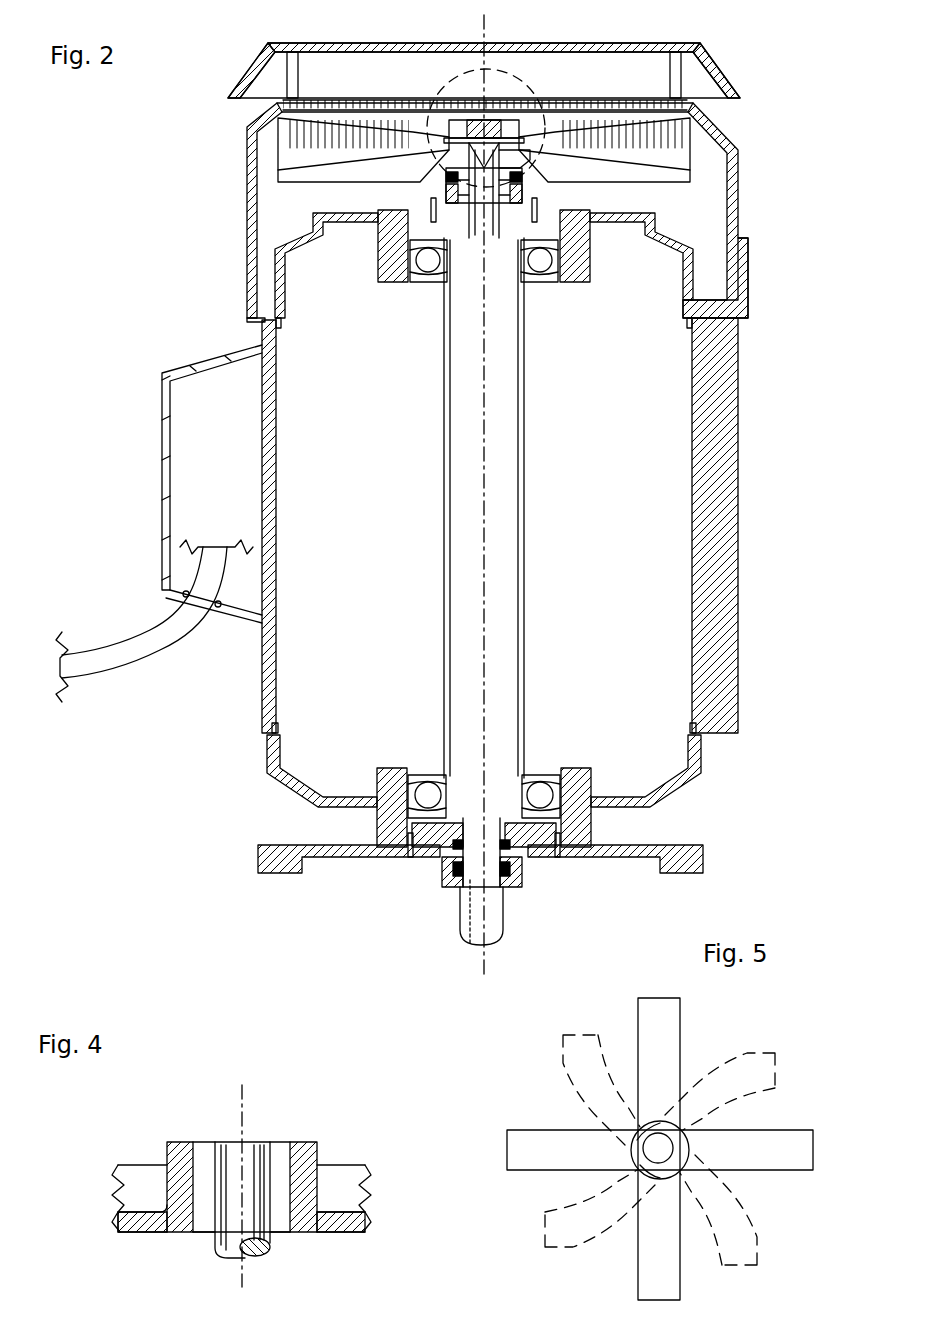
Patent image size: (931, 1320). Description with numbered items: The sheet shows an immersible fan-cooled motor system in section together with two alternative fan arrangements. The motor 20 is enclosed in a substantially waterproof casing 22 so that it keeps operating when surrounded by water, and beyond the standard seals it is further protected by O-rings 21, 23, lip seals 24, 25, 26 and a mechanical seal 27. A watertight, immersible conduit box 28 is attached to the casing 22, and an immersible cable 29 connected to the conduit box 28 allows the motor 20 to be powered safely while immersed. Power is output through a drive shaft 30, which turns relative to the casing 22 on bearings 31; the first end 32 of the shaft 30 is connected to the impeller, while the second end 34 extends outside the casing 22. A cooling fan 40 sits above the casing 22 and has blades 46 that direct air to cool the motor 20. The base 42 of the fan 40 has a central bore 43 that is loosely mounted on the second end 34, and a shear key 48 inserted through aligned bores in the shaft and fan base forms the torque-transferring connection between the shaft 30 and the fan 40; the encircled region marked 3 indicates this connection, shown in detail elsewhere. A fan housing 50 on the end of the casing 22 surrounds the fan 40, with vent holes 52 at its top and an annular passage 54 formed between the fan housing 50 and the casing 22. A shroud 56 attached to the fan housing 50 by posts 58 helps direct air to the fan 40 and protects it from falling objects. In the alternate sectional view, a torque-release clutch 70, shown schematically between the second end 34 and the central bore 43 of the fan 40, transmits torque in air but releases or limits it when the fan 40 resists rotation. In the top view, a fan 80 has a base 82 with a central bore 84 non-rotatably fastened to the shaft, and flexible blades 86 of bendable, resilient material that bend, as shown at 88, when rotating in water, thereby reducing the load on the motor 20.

In FIG. 2, the section detail indicator (FIG. 3) 3 is at (443, 90).
In FIG. 2, the motor 20 is at (800, 357).
In FIG. 2, the O-ring 21 is at (282, 330).
In FIG. 2, the casing 22 is at (262, 638).
In FIG. 2, the O-ring 23 is at (442, 867).
In FIG. 2, the lip seal 24 is at (427, 857).
In FIG. 2, the lip seal 25 is at (460, 887).
In FIG. 2, the lip seal 26 is at (527, 187).
In FIG. 2, the mechanical seal 27 is at (563, 217).
In FIG. 2, the conduit box 28 is at (162, 487).
In FIG. 2, the immersible cable 29 is at (138, 663).
In FIG. 2, the drive shaft 30 is at (530, 515).
In FIG. 2, the bearings 31 is at (427, 280).
In FIG. 2, the first end 32 is at (460, 920).
In FIG. 2, the second end 34 is at (482, 118).
In FIG. 4, the second end 34 is at (255, 1142).
In FIG. 2, the cooling fan 40 is at (270, 200).
In FIG. 4, the cooling fan 40 is at (325, 1102).
In FIG. 2, the base 42 is at (513, 113).
In FIG. 4, the base 42 is at (185, 1142).
In FIG. 4, the central bore 43 is at (290, 1145).
In FIG. 2, the blades 46 is at (484, 150).
In FIG. 4, the blades 46 is at (128, 1200).
In FIG. 2, the shear key 48 is at (520, 140).
In FIG. 2, the fan housing 50 is at (748, 263).
In FIG. 2, the vent holes 52 is at (370, 100).
In FIG. 2, the annular passage 54 is at (262, 326).
In FIG. 2, the shroud 56 is at (258, 58).
In FIG. 2, the posts 58 is at (298, 58).
In FIG. 4, the torque-release clutch 70 is at (200, 1234).
In FIG. 5, the fan 80 is at (825, 1033).
In FIG. 5, the base 82 is at (682, 1132).
In FIG. 5, the central bore 84 is at (650, 1158).
In FIG. 5, the flexible blades 86 is at (640, 1010).
In FIG. 5, the bent position of flexible blades 88 is at (563, 1045).